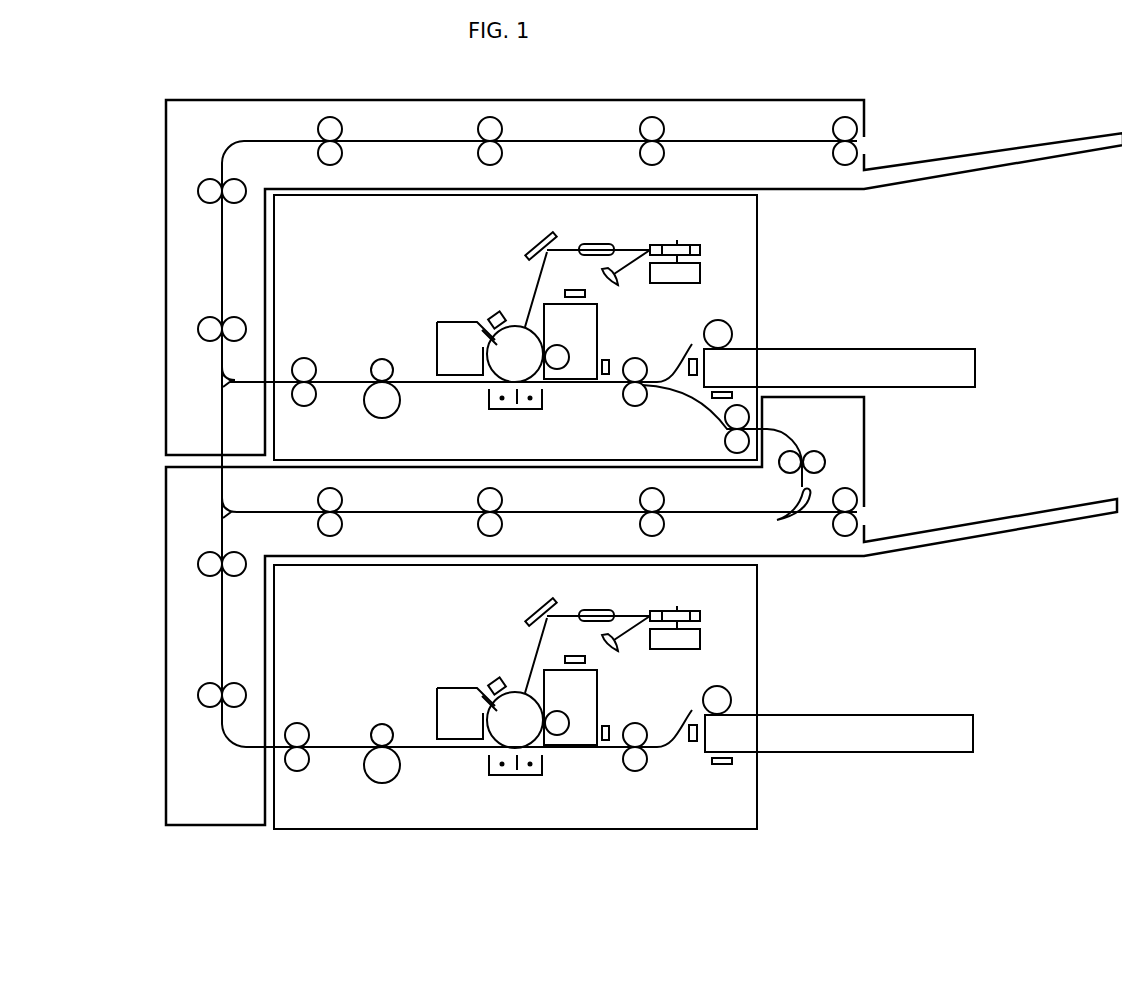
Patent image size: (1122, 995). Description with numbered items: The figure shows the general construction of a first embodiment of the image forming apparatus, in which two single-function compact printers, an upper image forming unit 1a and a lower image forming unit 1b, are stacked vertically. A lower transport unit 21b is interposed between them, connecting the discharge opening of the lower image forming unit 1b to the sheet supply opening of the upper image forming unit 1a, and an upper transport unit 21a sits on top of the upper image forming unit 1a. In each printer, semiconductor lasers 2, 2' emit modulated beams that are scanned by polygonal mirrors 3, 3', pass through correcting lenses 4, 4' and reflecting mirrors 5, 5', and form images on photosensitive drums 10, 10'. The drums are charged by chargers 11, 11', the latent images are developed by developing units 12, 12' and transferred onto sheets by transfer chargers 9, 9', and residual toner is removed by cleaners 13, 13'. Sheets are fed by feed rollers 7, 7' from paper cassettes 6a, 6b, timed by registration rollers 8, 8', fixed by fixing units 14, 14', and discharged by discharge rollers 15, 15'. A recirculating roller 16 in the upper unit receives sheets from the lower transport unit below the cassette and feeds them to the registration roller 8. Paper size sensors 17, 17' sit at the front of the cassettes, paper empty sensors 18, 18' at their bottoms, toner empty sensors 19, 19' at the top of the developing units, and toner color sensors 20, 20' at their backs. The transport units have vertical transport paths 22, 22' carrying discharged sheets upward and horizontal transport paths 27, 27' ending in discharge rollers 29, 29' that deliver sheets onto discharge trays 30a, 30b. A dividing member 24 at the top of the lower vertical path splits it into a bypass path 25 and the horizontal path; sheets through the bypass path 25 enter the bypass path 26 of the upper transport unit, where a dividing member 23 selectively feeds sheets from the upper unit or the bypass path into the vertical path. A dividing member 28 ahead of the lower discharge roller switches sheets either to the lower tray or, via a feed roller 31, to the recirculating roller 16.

The upper image forming unit 1a is at (761, 266).
The lower image forming unit 1b is at (765, 633).
The semiconductor laser 2 is at (621, 293).
The semiconductor laser 2' is at (626, 660).
The polygonal mirror 3 is at (673, 253).
The polygonal mirror 3' is at (677, 619).
The correcting lens 4 is at (605, 231).
The correcting lens 4' is at (609, 598).
The reflecting mirror 5 is at (573, 268).
The reflecting mirror 5' is at (575, 637).
The paper cassette 6a is at (878, 355).
The paper cassette 6b is at (850, 738).
The feed roller 7 is at (719, 310).
The feed roller 7' is at (722, 676).
The registration roller 8 is at (635, 406).
The registration roller 8' is at (640, 767).
The transfer charger 9 is at (508, 422).
The transfer charger 9' is at (503, 789).
The photosensitive drum 10 is at (524, 390).
The photosensitive drum 10' is at (524, 751).
The charger 11 is at (493, 296).
The charger 11' is at (494, 661).
The developing unit 12 is at (595, 341).
The developing unit 12' is at (600, 707).
The cleaner 13 is at (458, 325).
The cleaner 13' is at (453, 694).
The fixing unit 14 is at (407, 397).
The fixing unit 14' is at (386, 772).
The discharge roller 15 is at (317, 397).
The discharge roller 15' is at (299, 772).
The recirculating roller 16 is at (733, 440).
The paper size sensor 17 is at (673, 394).
The paper size sensor 17' is at (688, 756).
The paper empty sensor 18 is at (762, 409).
The paper empty sensor 18' is at (724, 789).
The toner empty sensor 19 is at (566, 277).
The toner empty sensor 19' is at (564, 644).
The toner color sensor 20 is at (591, 407).
The toner color sensor 20' is at (593, 774).
The upper transport unit 21a is at (158, 383).
The lower transport unit 21b is at (158, 706).
The vertical transport path 22 is at (515, 432).
The vertical transport path 22' is at (209, 649).
The dividing member 23 is at (220, 378).
The dividing member 24 is at (224, 510).
The bypass path 25 is at (219, 475).
The bypass path 26 is at (220, 437).
The horizontal transport path 27 is at (491, 150).
The horizontal transport path 27' is at (491, 518).
The dividing member 28 is at (795, 497).
The discharge roller 29 is at (815, 151).
The discharge roller 29' is at (880, 509).
The discharge tray 30a is at (925, 160).
The discharge tray 30b is at (967, 523).
The feed roller 31 is at (818, 456).